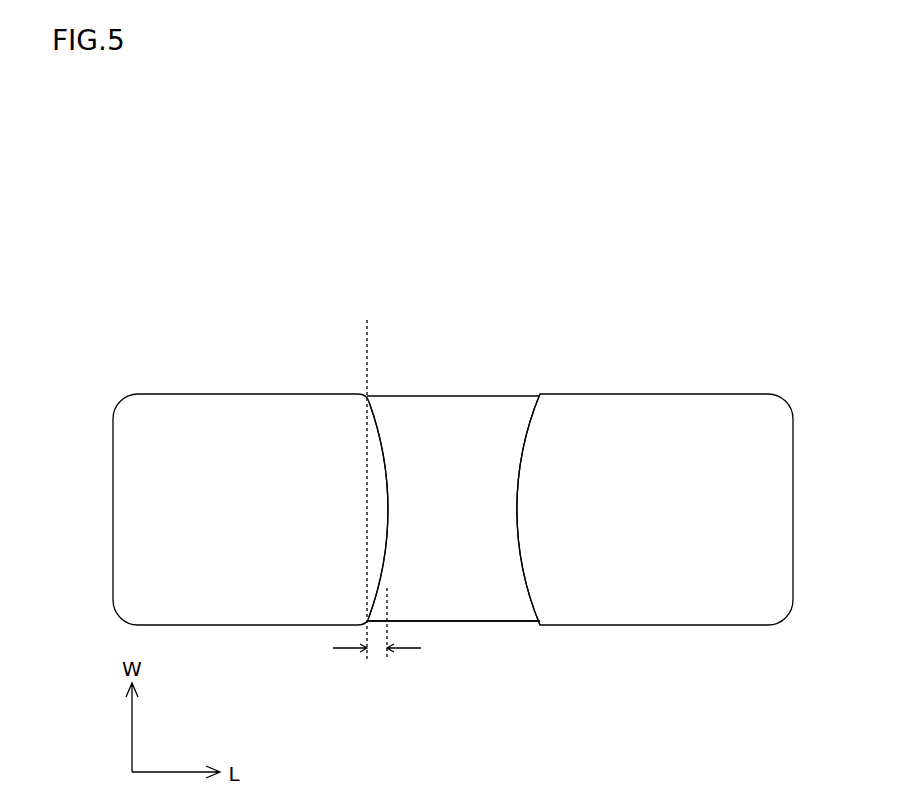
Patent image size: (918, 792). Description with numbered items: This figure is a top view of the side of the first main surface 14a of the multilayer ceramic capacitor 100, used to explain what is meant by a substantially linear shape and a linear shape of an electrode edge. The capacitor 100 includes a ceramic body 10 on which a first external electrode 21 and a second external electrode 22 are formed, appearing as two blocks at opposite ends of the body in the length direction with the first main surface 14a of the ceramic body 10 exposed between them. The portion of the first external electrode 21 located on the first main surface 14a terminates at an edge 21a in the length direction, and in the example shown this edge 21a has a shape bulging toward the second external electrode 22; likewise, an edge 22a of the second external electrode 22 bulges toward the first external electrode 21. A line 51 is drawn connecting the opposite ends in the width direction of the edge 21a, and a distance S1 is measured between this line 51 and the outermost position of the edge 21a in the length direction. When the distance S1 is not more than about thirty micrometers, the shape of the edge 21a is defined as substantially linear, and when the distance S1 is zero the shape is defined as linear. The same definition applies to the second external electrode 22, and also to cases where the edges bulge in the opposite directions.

The multilayer ceramic capacitor 100 is at (473, 275).
The ceramic body 10 is at (493, 394).
The first main surface 14a is at (498, 602).
The first external electrode 21 is at (190, 410).
The edge of first external electrode 21a is at (383, 441).
The second external electrode 22 is at (677, 410).
The edge of second external electrode 22a is at (519, 483).
The line 51 is at (368, 350).
The distance S1 is at (380, 655).